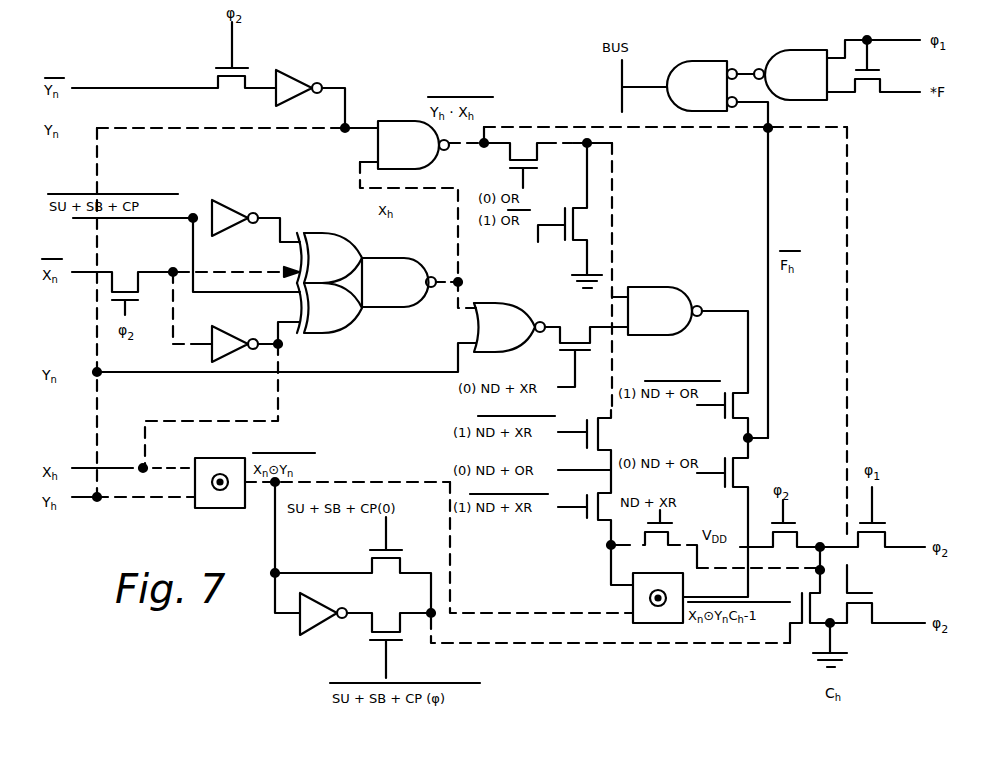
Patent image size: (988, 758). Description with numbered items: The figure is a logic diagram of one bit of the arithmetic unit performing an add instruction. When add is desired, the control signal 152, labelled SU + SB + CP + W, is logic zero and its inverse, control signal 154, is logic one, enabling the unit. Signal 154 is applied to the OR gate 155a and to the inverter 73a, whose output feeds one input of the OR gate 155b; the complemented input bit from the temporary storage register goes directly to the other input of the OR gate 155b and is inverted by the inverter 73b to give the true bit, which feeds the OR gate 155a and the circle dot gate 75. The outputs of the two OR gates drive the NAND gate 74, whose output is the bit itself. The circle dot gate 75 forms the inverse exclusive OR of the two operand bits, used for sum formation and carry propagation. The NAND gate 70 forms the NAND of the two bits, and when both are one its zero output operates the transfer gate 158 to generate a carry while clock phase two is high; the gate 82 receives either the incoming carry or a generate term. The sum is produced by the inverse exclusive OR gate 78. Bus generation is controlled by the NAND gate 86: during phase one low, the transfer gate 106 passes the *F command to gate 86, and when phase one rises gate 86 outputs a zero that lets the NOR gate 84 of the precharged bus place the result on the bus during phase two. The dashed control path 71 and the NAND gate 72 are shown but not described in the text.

The NAND gate 70 is at (400, 136).
The control signal bus line 71 is at (612, 199).
The NAND gate 72 is at (721, 310).
The inverter 73a is at (229, 208).
The inverter 73b is at (228, 333).
The NAND gate 74 is at (392, 268).
The circle dot gate 75 is at (220, 510).
The inverse exclusive OR gate 78 is at (660, 624).
The gate 82 is at (820, 545).
The NOR gate 84 is at (700, 66).
The NAND gate 86 is at (796, 58).
The transfer gate 106 is at (893, 78).
The control signal 152 is at (353, 565).
The control signal 154 is at (402, 646).
The OR gate 155a is at (333, 322).
The OR gate 155b is at (329, 242).
The transfer gate 158 is at (851, 581).